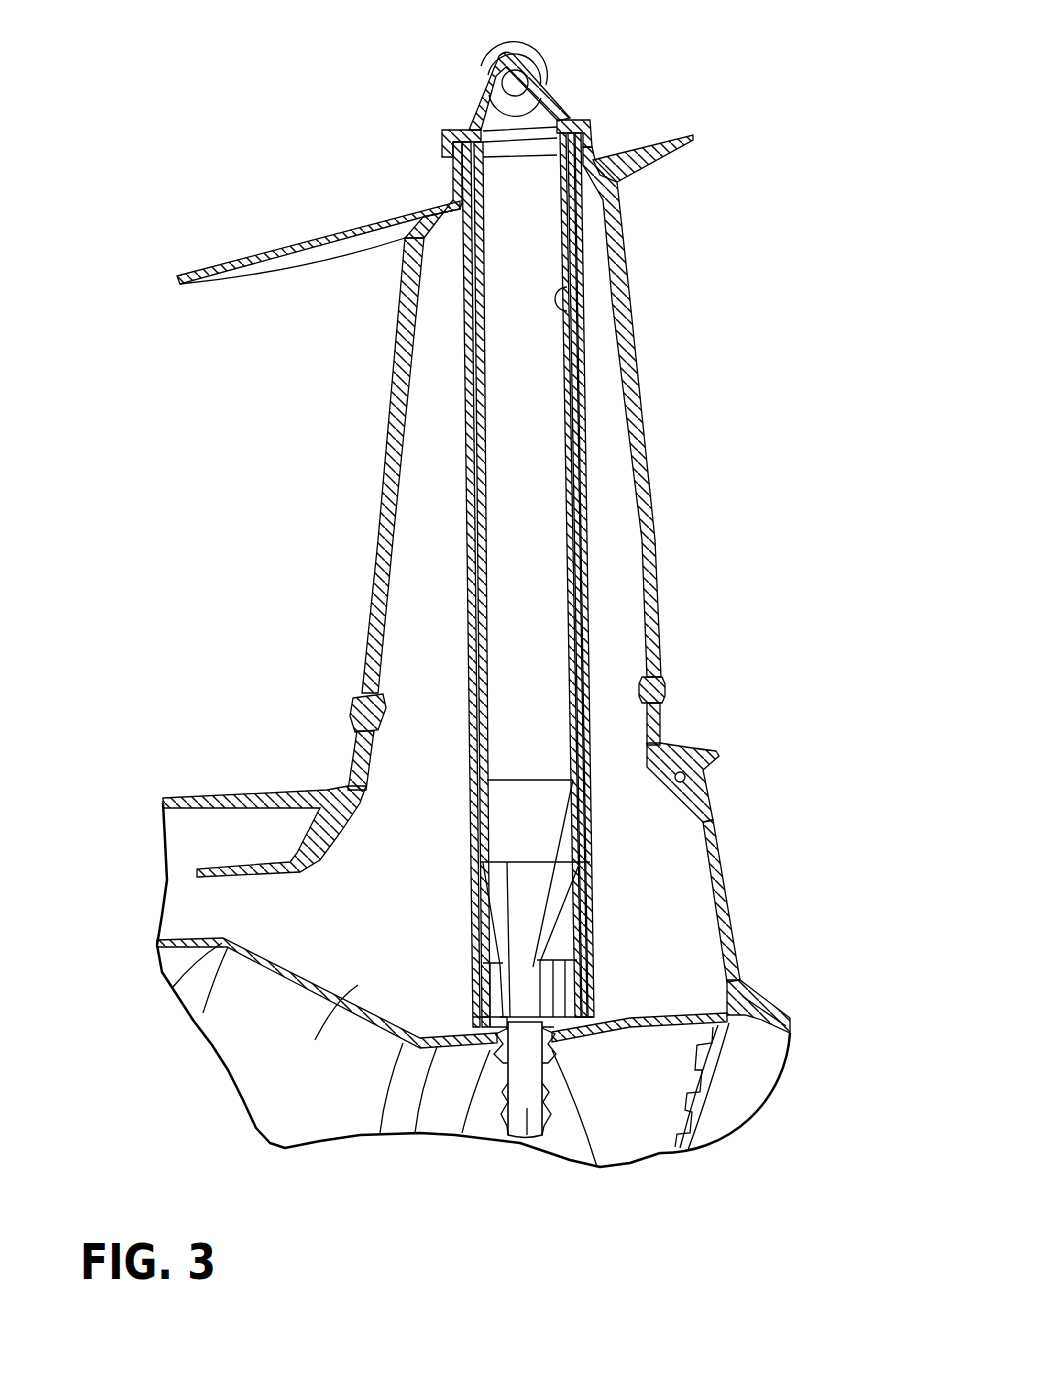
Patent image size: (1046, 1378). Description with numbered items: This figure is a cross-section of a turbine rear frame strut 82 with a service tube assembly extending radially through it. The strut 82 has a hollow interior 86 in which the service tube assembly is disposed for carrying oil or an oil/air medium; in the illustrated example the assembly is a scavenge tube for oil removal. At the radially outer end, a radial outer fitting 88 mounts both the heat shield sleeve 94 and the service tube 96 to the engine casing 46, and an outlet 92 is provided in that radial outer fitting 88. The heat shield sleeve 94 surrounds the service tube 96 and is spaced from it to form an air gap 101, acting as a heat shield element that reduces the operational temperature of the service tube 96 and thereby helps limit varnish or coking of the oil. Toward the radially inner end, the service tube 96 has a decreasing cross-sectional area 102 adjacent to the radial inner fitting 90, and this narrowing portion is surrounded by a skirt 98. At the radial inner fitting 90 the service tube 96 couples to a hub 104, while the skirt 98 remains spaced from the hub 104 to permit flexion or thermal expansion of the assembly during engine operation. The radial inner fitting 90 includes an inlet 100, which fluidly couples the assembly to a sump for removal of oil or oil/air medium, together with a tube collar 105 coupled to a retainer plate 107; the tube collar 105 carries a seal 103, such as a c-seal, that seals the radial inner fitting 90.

The engine casing 46 is at (305, 248).
The strut 82 is at (650, 467).
The hollow interior 86 is at (602, 535).
The radial outer fitting 88 is at (590, 104).
The radial inner fitting 90 is at (567, 1047).
The outlet 92 is at (513, 83).
The heat shield sleeve 94 is at (585, 372).
The service tube 96 is at (578, 313).
The skirt 98 is at (590, 916).
The inlet 100 is at (527, 1135).
The air gap 101 is at (590, 410).
The decreasing cross-sectional area 102 is at (560, 876).
The seal 103 is at (553, 1047).
The hub 104 is at (340, 1015).
The tube collar 105 is at (473, 1047).
The retainer plate 107 is at (447, 1130).